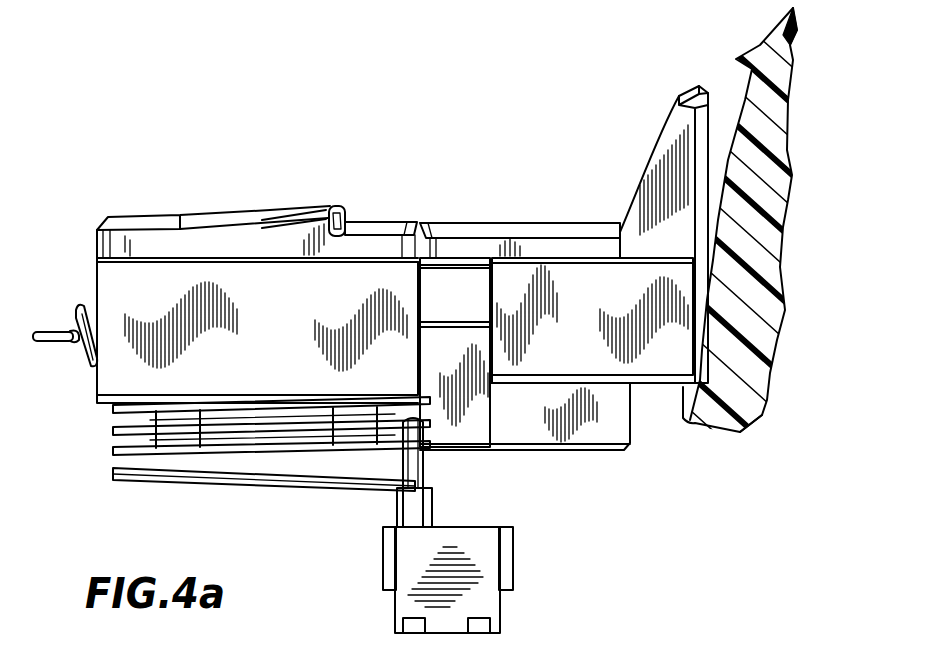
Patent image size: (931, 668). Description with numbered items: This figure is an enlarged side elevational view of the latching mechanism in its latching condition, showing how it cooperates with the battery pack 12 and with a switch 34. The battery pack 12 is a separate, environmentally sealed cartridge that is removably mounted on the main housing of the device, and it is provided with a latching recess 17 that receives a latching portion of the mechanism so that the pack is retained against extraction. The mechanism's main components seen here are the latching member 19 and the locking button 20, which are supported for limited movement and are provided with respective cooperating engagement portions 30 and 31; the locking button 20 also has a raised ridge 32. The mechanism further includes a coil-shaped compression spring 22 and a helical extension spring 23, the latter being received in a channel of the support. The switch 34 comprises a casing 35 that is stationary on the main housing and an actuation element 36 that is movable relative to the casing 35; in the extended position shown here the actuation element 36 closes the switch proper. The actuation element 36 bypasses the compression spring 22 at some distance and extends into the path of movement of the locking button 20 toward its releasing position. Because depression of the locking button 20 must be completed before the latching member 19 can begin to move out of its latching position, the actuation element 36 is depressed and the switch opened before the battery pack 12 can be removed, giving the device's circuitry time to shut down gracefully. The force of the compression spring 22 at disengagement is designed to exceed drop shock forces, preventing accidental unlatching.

The battery pack 12 is at (770, 27).
The latching recess 17 is at (732, 135).
The latching member 19 is at (540, 222).
The locking button 20 is at (160, 275).
The compression spring 22 is at (182, 475).
The helical extension spring 23 is at (72, 343).
The engagement portion 30 is at (380, 222).
The engagement portion 31 is at (442, 228).
The raised ridge 32 is at (335, 208).
The switch 34 is at (405, 566).
The casing 35 is at (485, 595).
The actuation element 36 is at (420, 468).